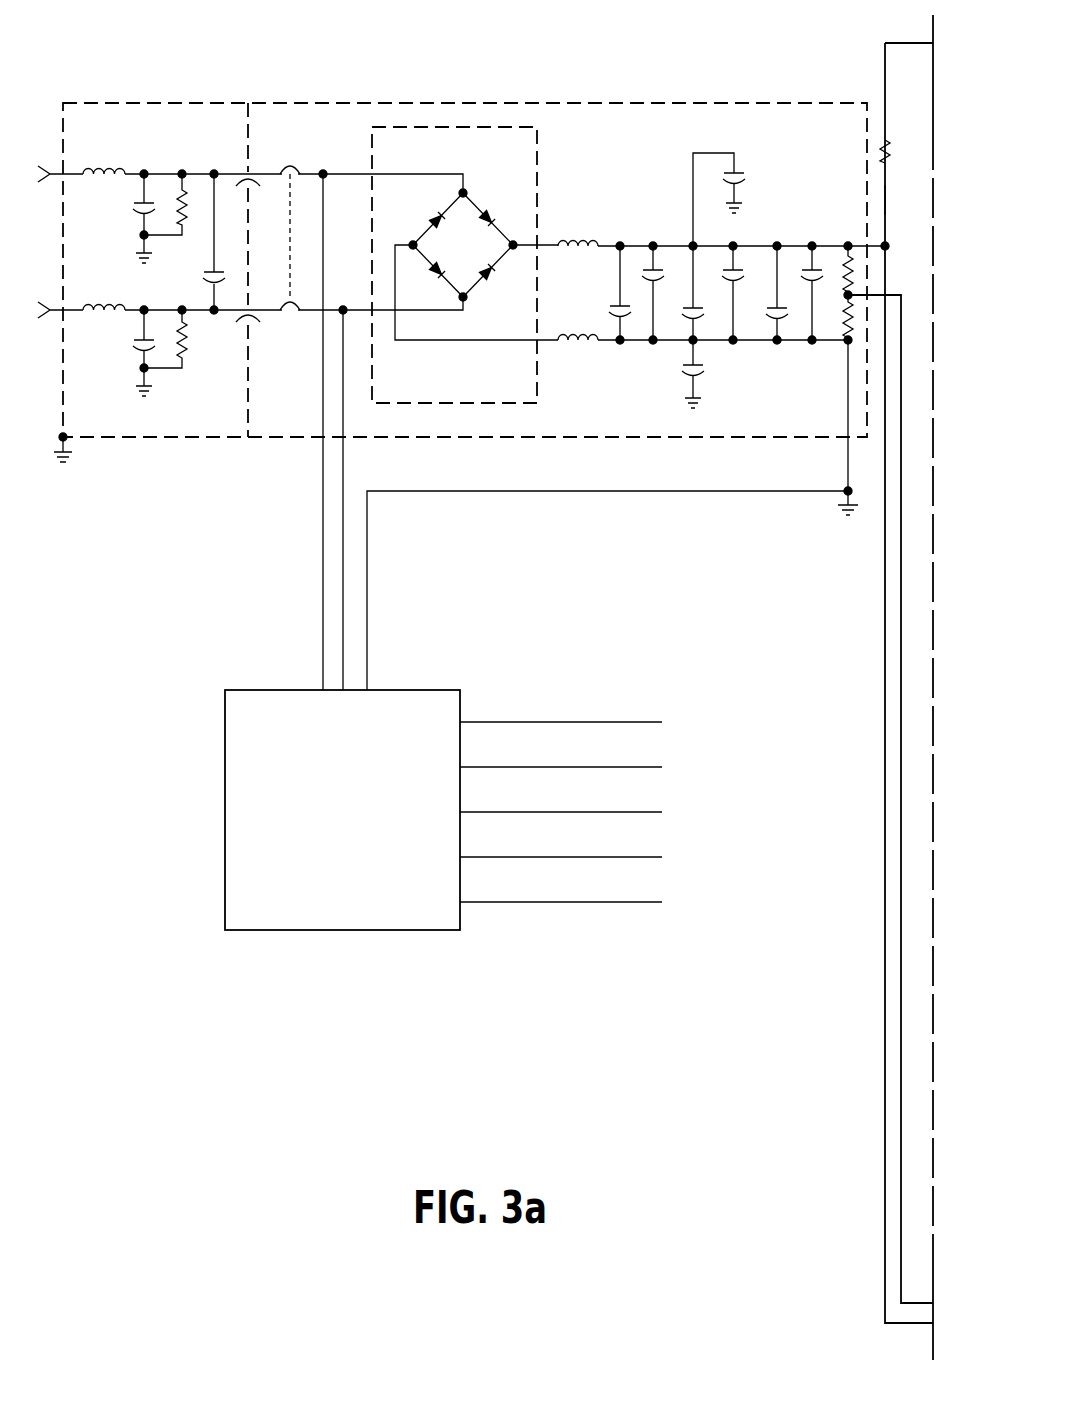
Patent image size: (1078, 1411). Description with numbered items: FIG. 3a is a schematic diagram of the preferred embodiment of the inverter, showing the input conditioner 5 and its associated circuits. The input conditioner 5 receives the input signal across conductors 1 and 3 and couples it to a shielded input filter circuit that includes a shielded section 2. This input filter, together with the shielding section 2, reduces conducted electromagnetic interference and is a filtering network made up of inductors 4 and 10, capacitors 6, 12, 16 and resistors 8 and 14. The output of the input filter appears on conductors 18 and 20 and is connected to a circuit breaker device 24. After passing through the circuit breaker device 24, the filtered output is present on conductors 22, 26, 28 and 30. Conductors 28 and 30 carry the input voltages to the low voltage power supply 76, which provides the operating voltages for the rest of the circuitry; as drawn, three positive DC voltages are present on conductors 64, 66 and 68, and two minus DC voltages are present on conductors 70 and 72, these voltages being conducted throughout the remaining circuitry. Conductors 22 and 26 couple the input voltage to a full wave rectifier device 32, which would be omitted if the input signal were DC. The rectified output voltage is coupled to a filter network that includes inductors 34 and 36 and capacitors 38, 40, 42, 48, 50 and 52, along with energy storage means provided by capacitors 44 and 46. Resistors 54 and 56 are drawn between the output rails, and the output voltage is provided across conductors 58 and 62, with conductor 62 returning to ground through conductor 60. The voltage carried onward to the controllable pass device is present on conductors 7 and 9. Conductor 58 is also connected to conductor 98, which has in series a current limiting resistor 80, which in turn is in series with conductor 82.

The conductor 1 is at (59, 308).
The shielded section 2 is at (248, 128).
The conductor 3 is at (59, 172).
The inductor 4 is at (104, 171).
The input conditioner 5 is at (281, 437).
The capacitor 6 is at (134, 214).
The conductor 7 is at (902, 310).
The resistor 8 is at (186, 211).
The conductor 9 is at (886, 264).
The inductor 10 is at (105, 318).
The capacitor 12 is at (135, 351).
The resistor 14 is at (190, 343).
The capacitor 16 is at (204, 280).
The conductor 18 is at (252, 172).
The conductor 20 is at (255, 306).
The conductor 22 is at (340, 172).
The circuit breaker device 24 is at (293, 160).
The conductor 26 is at (330, 306).
The conductor 28 is at (323, 606).
The conductor 30 is at (344, 463).
The full wave rectifier device 32 is at (537, 147).
The inductor 34 is at (584, 341).
The inductor 36 is at (573, 243).
The capacitor 38 is at (610, 311).
The capacitor 40 is at (654, 284).
The capacitor 42 is at (690, 314).
The capacitor 44 is at (705, 370).
The capacitor 46 is at (740, 172).
The capacitor 48 is at (732, 279).
The capacitor 50 is at (776, 313).
The capacitor 52 is at (811, 279).
The resistor 54 is at (846, 277).
The resistor 56 is at (846, 321).
The conductor 58 is at (862, 246).
The ground conductor 60 is at (597, 491).
The conductor 62 is at (848, 462).
The conductor 64 is at (641, 722).
The conductor 66 is at (641, 767).
The conductor 68 is at (641, 812).
The conductor 70 is at (641, 857).
The conductor 72 is at (641, 902).
The low voltage power supply 76 is at (352, 930).
The current limiting resistor 80 is at (890, 155).
The conductor 82 is at (907, 42).
The conductor 98 is at (888, 200).